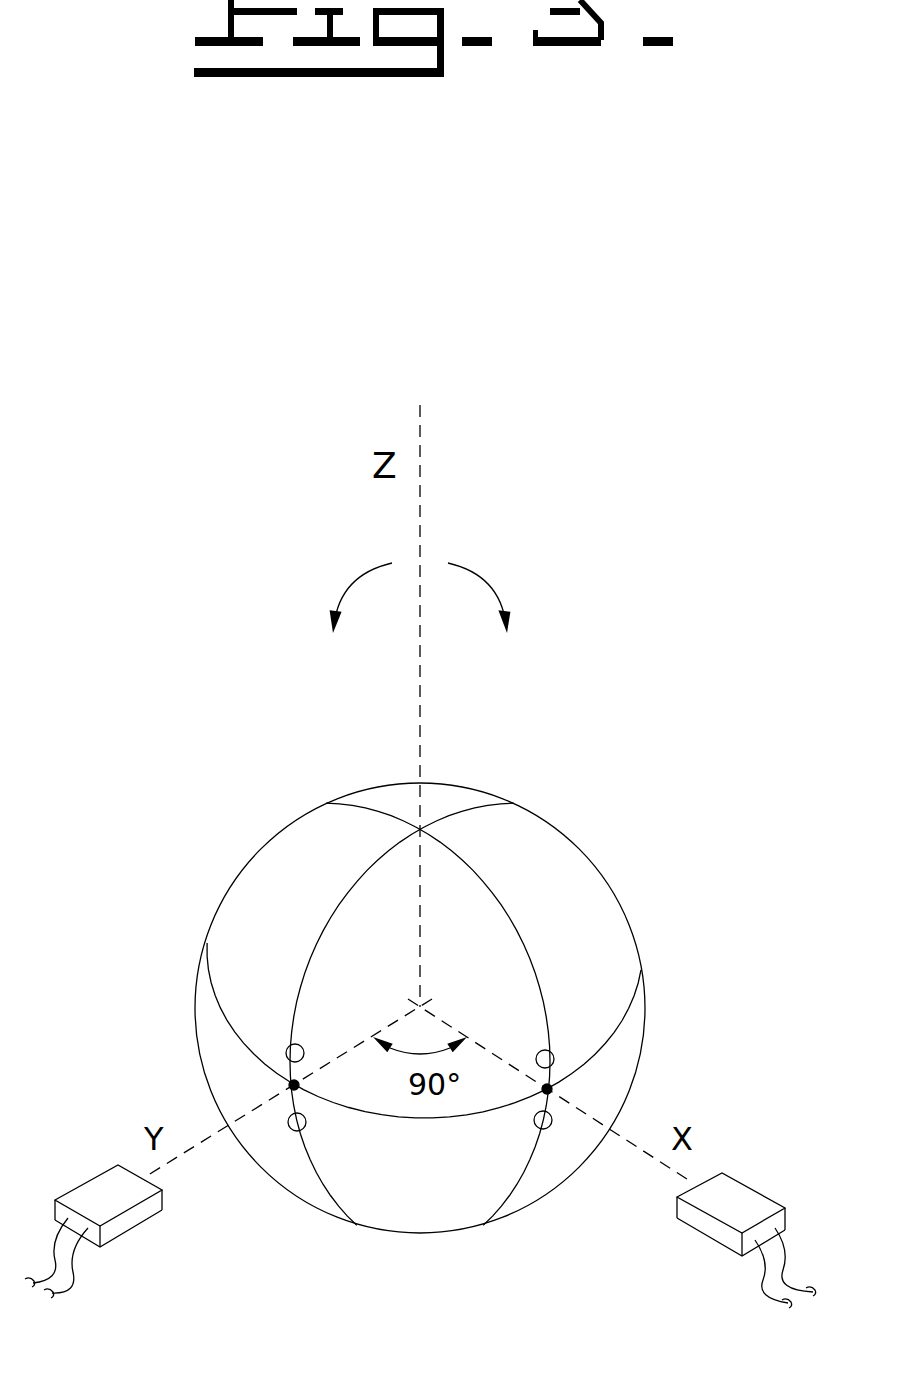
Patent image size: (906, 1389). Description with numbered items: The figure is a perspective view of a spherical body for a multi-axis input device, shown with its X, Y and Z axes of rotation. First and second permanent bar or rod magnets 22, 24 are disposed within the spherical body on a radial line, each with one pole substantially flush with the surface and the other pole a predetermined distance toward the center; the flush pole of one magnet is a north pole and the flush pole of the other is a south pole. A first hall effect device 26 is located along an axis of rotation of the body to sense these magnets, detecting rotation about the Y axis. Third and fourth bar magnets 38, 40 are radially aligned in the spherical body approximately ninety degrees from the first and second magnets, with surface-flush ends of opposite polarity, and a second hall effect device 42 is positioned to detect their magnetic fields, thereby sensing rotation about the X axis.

The first bar magnet 22 is at (546, 1050).
The second bar magnet 24 is at (535, 1123).
The first hall effect device 26 is at (758, 1190).
The third bar magnet 38 is at (293, 1044).
The fourth bar magnet 40 is at (307, 1120).
The second hall effect device 42 is at (82, 1182).